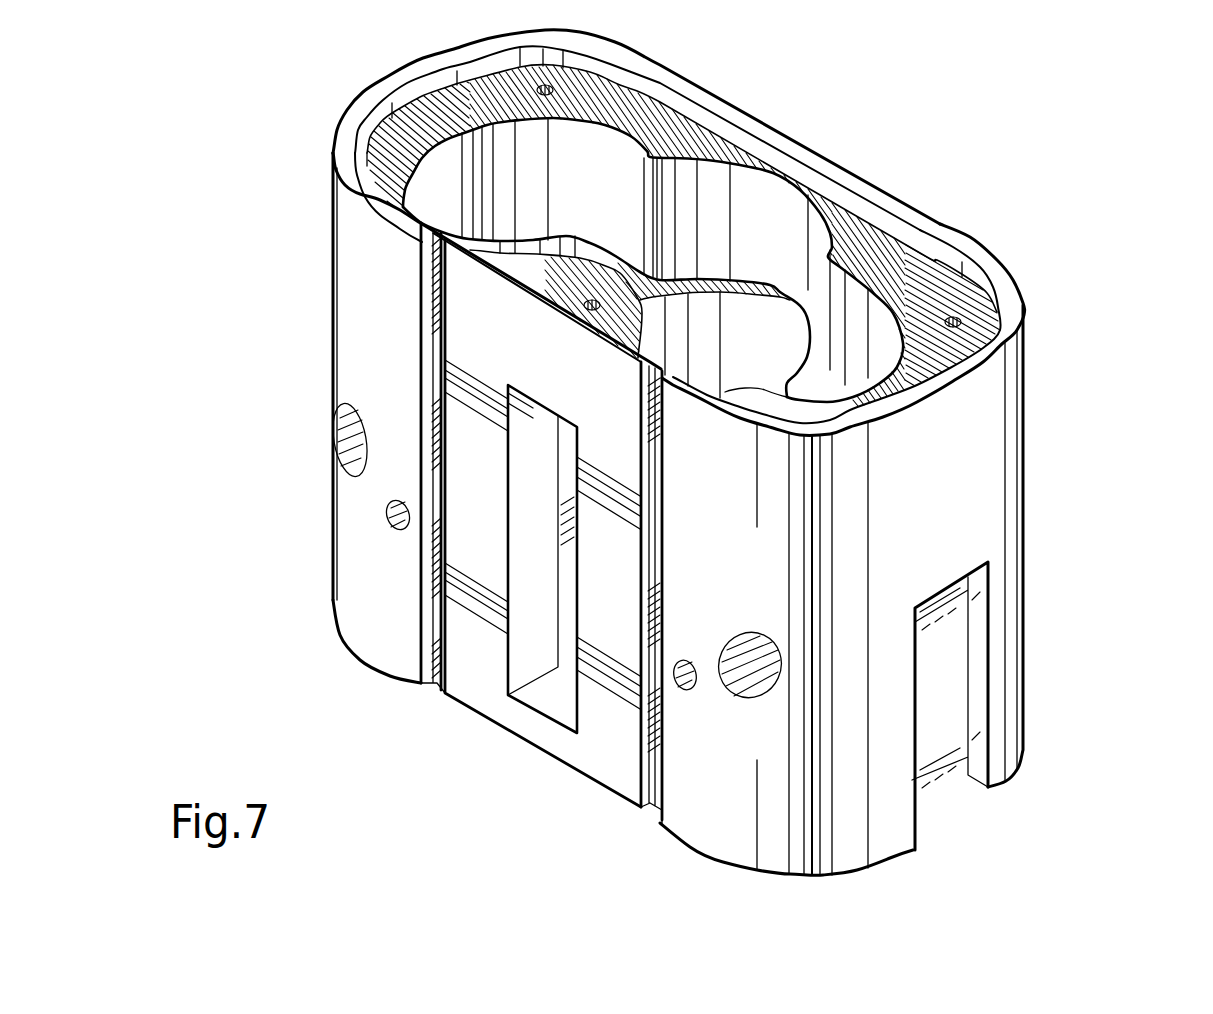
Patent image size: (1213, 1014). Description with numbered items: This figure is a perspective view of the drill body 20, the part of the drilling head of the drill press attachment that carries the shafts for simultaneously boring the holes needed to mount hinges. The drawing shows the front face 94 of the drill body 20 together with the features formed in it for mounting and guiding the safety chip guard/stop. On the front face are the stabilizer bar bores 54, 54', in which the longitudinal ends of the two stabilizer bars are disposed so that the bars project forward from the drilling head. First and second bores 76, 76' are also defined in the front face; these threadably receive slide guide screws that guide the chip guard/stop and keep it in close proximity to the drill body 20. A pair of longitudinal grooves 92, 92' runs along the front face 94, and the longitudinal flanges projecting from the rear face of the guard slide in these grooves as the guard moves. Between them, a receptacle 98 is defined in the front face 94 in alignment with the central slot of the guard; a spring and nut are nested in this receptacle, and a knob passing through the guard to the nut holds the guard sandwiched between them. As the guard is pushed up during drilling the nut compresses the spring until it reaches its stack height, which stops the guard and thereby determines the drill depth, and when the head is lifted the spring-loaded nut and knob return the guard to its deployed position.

The drill body 20 is at (1093, 346).
The stabilizer bar bore 54 is at (318, 445).
The stabilizer bar bore 54' is at (735, 693).
The first bore 76 is at (365, 591).
The second bore 76' is at (693, 635).
The longitudinal groove 92 is at (415, 491).
The longitudinal groove 92' is at (613, 607).
The front face 94 is at (498, 348).
The receptacle 98 is at (520, 648).